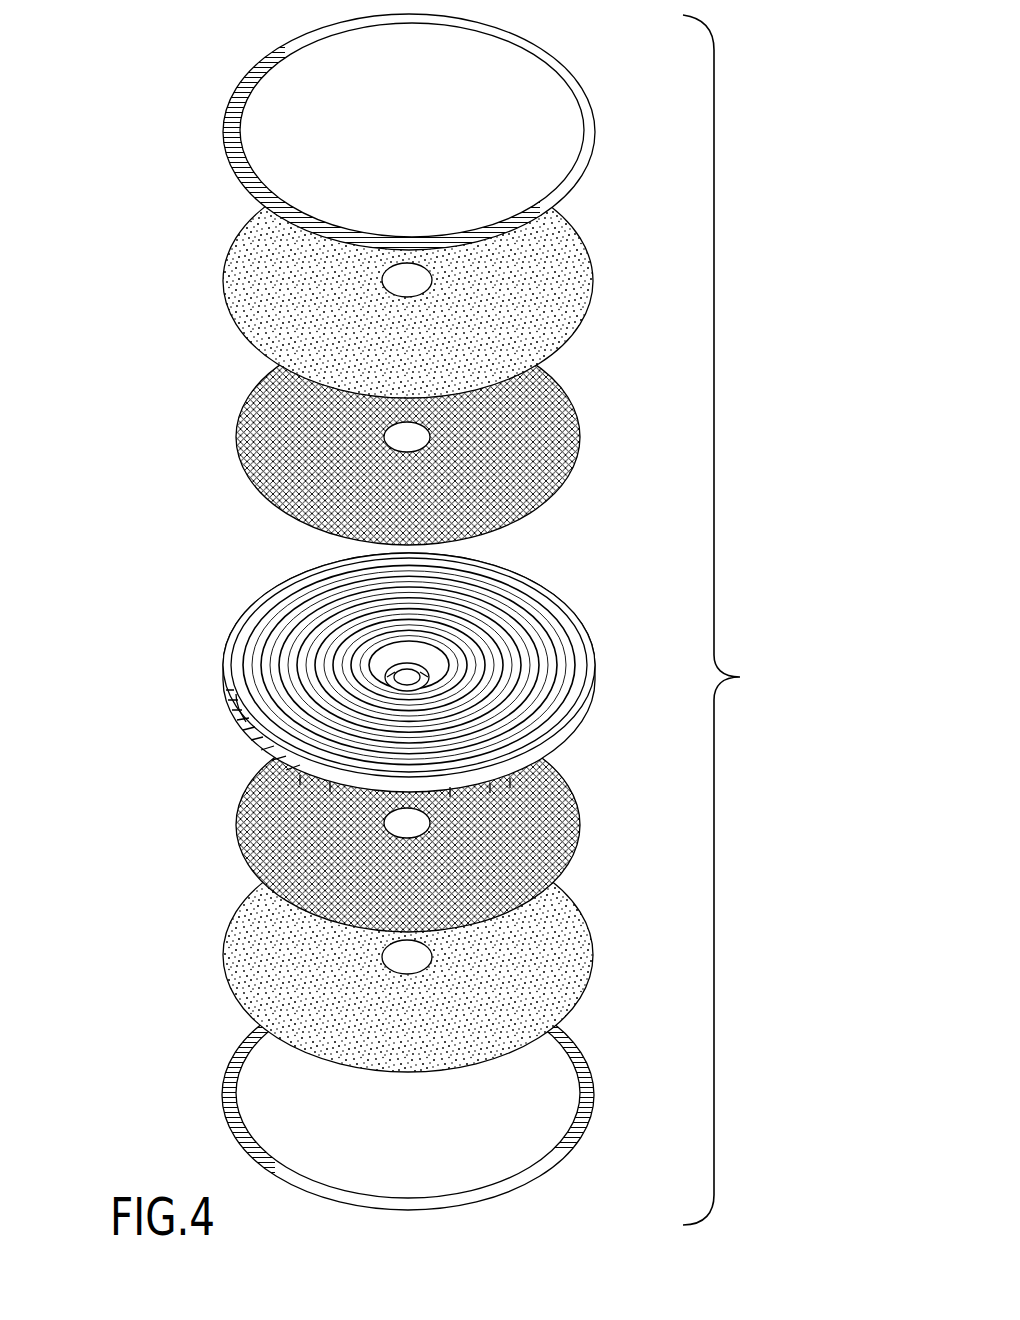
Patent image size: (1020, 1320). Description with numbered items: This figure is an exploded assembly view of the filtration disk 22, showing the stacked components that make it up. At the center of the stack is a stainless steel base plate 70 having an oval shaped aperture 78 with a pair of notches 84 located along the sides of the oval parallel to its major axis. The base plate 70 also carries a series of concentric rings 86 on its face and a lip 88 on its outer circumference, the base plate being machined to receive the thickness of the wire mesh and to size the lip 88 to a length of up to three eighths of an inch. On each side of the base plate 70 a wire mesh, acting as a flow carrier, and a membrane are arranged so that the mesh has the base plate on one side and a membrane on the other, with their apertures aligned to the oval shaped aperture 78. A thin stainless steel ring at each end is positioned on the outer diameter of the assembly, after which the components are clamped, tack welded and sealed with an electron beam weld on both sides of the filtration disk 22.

The filtration disk 22 is at (733, 620).
The base plate 70 is at (396, 669).
The oval shaped aperture 78 is at (400, 668).
The notch 84 is at (432, 668).
The concentric rings 86 is at (498, 715).
The lip 88 is at (240, 700).